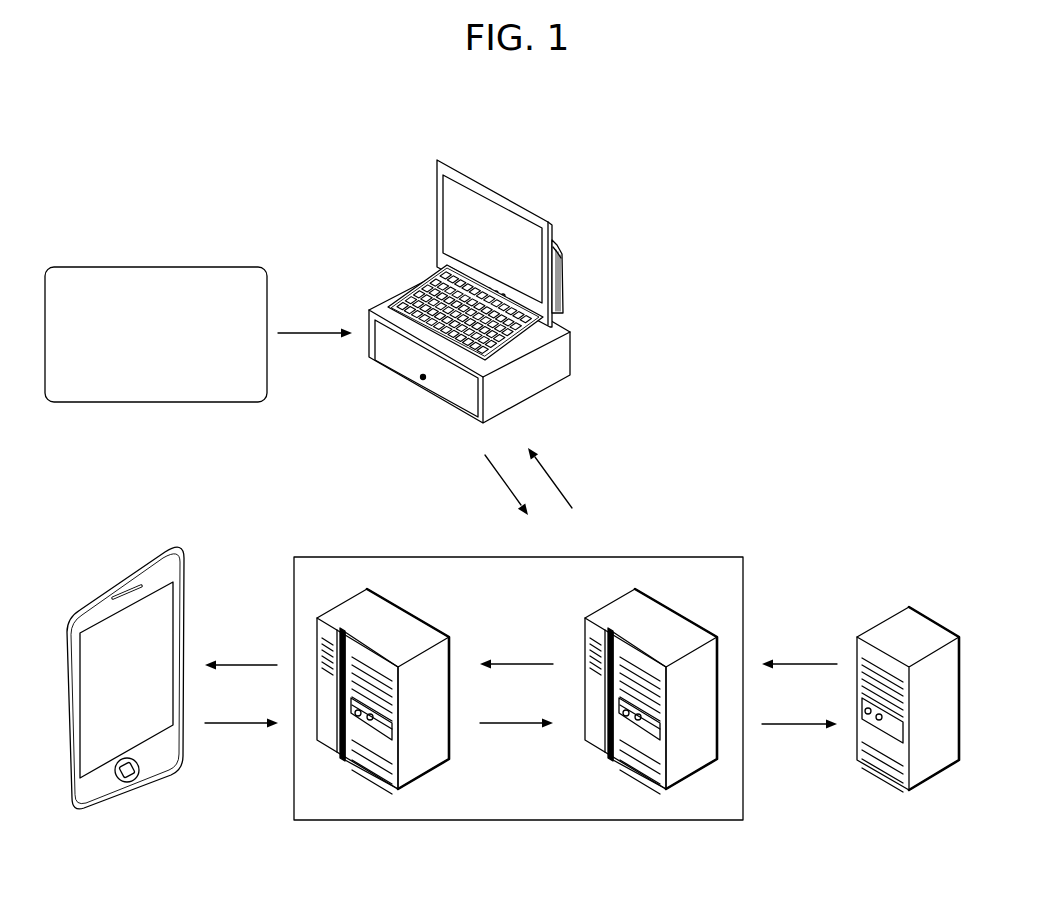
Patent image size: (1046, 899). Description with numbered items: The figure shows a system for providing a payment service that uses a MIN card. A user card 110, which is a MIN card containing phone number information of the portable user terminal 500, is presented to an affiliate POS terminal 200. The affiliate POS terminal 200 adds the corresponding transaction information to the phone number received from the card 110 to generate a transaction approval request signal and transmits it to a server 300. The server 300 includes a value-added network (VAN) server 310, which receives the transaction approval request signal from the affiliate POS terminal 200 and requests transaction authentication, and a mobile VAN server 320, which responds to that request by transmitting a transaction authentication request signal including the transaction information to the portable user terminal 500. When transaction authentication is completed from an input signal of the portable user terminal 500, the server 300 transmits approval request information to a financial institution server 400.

The user card 110 is at (156, 267).
The affiliate POS terminal 200 is at (512, 197).
The server 300 is at (521, 664).
The value-added network (VAN) server 310 is at (689, 777).
The mobile VAN server 320 is at (425, 777).
The financial institution server 400 is at (887, 618).
The portable user terminal 500 is at (122, 565).